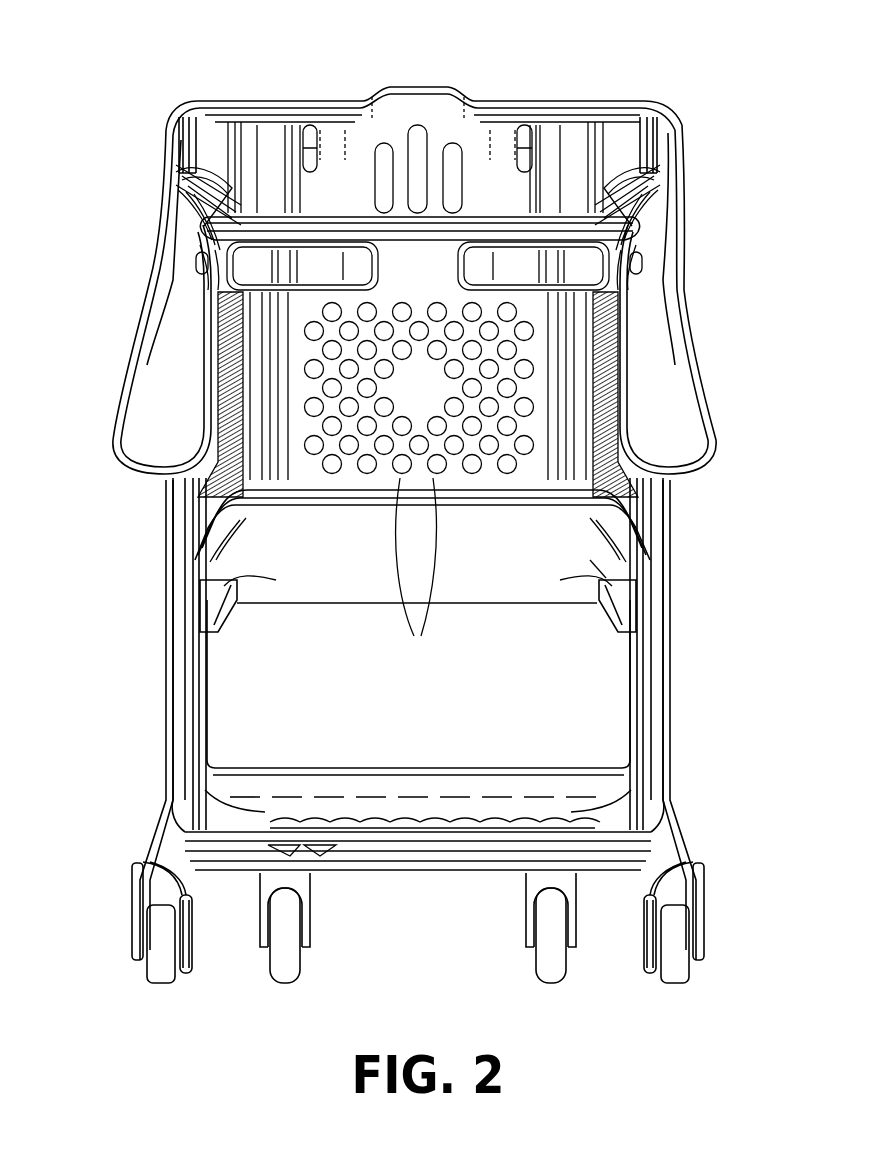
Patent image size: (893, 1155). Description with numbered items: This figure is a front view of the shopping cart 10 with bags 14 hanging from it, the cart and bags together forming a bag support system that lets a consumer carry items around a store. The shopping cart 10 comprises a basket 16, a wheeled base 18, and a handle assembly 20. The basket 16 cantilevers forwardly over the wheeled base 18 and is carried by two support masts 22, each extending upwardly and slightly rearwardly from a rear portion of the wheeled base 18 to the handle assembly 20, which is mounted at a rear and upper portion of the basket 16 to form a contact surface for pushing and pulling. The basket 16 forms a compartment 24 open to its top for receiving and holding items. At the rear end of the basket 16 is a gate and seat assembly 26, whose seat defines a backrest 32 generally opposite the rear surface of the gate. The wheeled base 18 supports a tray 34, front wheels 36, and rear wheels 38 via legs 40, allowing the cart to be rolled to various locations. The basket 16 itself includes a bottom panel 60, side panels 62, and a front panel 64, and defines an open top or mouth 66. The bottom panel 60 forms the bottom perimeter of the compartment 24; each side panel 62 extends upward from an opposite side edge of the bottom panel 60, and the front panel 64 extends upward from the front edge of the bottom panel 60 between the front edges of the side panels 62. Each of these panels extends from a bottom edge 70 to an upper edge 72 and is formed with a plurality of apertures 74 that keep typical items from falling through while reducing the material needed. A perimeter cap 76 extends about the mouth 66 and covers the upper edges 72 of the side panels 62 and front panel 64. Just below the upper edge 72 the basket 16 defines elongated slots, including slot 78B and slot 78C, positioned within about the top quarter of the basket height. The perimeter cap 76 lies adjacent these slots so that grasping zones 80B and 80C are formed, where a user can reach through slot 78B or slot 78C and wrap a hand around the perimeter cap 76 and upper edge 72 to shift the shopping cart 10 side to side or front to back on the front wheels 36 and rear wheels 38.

The shopping cart 10 is at (190, 50).
The bags 14 is at (148, 426).
The basket 16 is at (245, 552).
The wheeled base 18 is at (592, 842).
The handle assembly 20 is at (664, 113).
The support masts 22 is at (190, 710).
The compartment 24 is at (238, 180).
The gate and seat assembly 26 is at (583, 158).
The backrest 32 is at (430, 108).
The tray 34 is at (400, 830).
The front wheels 36 is at (283, 972).
The rear wheels 38 is at (160, 972).
The legs 40 is at (143, 866).
The bottom panel 60 is at (610, 583).
The side panels 62 is at (192, 495).
The front panel 64 is at (447, 367).
The mouth 66 is at (672, 168).
The bottom edge 70 is at (624, 562).
The upper edge 72 is at (190, 190).
The apertures 74 is at (416, 572).
The perimeter cap 76 is at (316, 222).
The slot 78B is at (605, 255).
The slot 78C is at (228, 300).
The grasping zone 80B is at (600, 210).
The grasping zone 80C is at (232, 276).